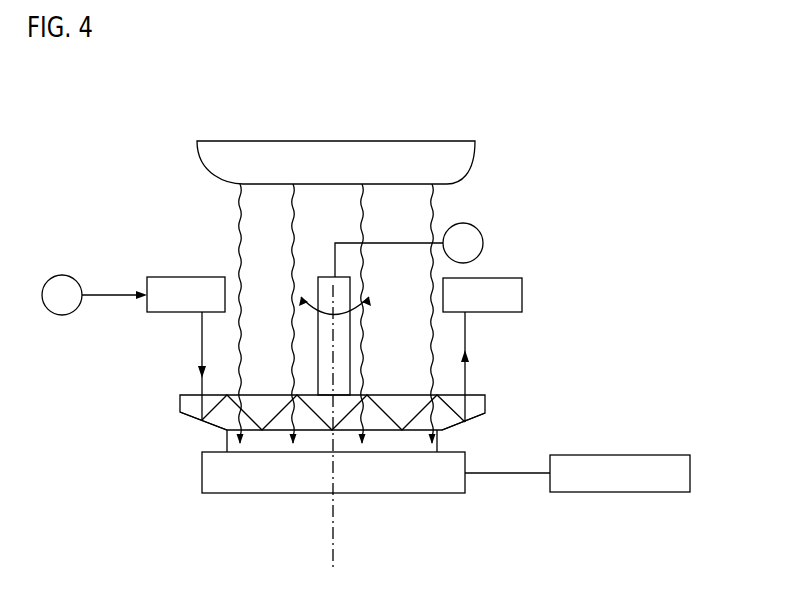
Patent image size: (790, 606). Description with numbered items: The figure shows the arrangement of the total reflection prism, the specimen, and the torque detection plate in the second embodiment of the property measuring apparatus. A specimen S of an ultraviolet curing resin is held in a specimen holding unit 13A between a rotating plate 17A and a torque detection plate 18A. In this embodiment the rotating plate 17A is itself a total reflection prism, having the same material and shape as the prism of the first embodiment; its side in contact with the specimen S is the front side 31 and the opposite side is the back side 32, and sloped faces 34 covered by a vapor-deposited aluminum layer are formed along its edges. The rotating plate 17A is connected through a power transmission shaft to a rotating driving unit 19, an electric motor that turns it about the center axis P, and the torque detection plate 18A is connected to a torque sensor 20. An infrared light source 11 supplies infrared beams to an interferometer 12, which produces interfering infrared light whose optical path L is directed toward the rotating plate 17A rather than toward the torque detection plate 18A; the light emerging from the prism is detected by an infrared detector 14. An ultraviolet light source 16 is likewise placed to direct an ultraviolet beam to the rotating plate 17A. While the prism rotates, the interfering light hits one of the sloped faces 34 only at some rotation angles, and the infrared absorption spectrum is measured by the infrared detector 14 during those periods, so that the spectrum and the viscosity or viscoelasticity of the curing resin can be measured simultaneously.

The infrared light source 11 is at (62, 274).
The interferometer 12 is at (163, 277).
The specimen holding unit 13A is at (660, 151).
The infrared detector 14 is at (523, 295).
The ultraviolet light source 16 is at (335, 140).
The rotating plate 17A is at (475, 398).
The torque detection plate 18A is at (427, 485).
The rotating driving unit 19 is at (484, 243).
The torque sensor 20 is at (582, 492).
The front side 31 is at (382, 432).
The back side 32 is at (396, 394).
The sloped faces 34 is at (192, 418).
The optical path L is at (200, 378).
The specimen S is at (225, 442).
The center axis P is at (330, 548).